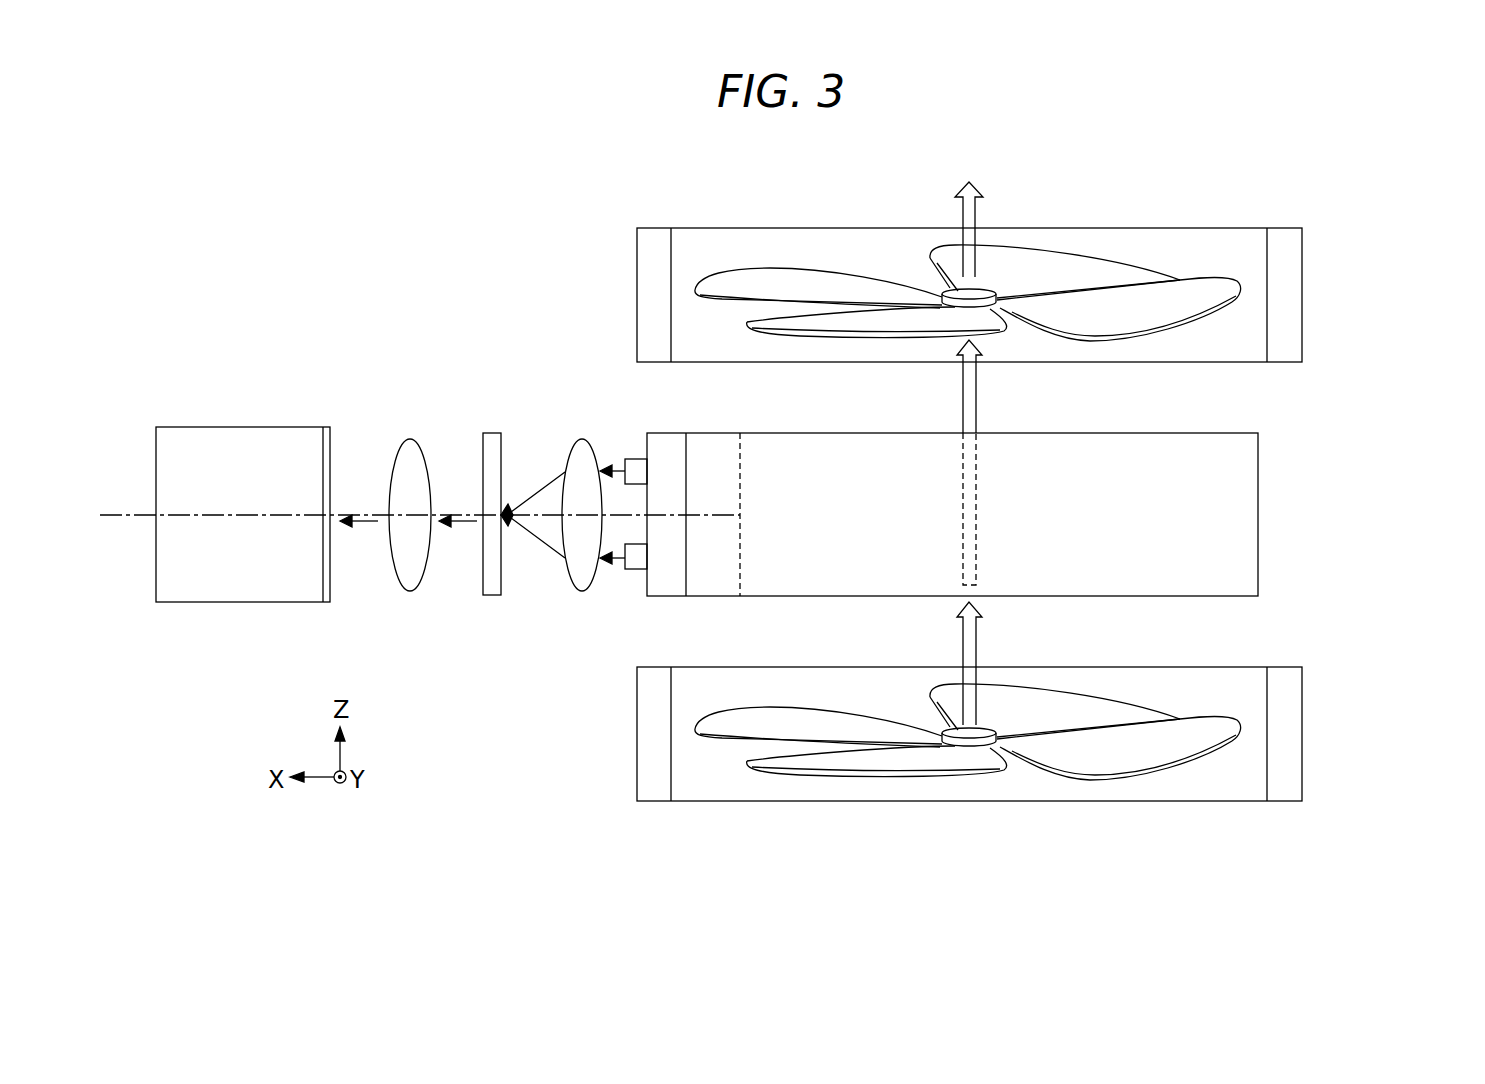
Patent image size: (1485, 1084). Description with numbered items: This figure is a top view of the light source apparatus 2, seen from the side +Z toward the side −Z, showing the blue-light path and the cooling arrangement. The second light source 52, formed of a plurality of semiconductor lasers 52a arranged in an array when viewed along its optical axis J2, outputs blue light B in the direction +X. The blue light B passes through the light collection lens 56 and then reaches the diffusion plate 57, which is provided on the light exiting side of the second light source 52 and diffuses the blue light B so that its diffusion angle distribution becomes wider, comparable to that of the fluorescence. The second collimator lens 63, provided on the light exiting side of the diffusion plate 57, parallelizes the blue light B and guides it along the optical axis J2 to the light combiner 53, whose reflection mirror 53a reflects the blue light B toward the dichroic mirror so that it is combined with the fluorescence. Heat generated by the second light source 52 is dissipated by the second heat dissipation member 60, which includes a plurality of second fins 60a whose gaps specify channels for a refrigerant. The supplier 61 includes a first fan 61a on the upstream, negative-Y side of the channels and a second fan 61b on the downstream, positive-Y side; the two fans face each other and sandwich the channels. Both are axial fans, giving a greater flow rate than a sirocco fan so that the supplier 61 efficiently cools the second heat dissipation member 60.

The light source apparatus 2 is at (1342, 222).
The second light source 52 is at (628, 460).
The semiconductor laser 52a is at (611, 450).
The light combiner 53 is at (257, 467).
The reflection mirror 53a is at (263, 440).
The light collection lens 56 is at (578, 445).
The diffusion plate 57 is at (490, 445).
The second heat dissipation member 60 is at (1002, 486).
The second fin 60a is at (1260, 471).
The supplier 61 is at (1059, 514).
The first fan 61a is at (1031, 734).
The second fan 61b is at (1286, 329).
The second collimator lens 63 is at (410, 455).
The optical axis J2 is at (137, 500).
The blue light B is at (460, 530).